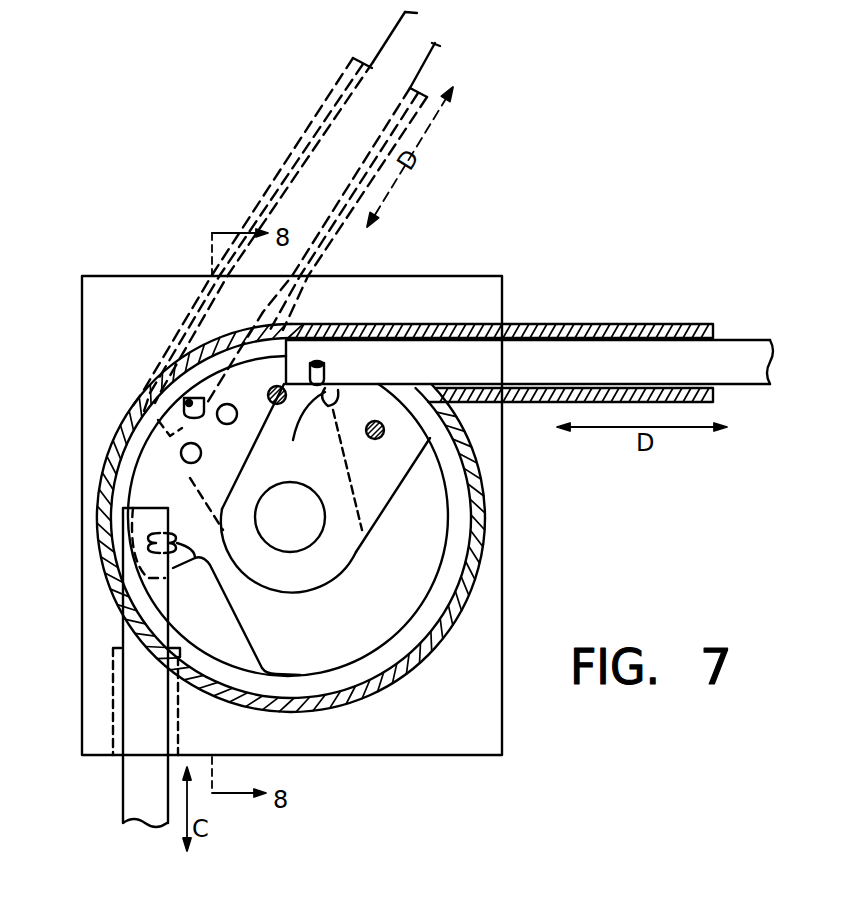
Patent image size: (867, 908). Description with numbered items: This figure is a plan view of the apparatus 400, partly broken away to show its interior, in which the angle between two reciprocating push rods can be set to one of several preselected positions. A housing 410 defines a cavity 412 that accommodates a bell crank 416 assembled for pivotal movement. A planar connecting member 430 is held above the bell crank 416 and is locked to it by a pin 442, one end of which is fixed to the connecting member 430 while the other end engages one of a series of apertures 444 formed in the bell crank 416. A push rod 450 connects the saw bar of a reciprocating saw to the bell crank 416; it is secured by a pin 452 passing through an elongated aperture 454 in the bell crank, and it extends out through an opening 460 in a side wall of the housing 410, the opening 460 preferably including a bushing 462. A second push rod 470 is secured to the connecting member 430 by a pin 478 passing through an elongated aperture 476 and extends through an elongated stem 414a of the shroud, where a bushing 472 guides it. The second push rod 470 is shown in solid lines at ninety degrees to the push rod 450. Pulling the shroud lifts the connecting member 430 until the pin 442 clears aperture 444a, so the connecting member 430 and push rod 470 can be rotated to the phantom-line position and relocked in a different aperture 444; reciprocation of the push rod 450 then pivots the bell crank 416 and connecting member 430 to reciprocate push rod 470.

The apparatus 400 is at (57, 331).
The housing 410 is at (399, 740).
The cavity 412 is at (450, 592).
The elongated stem 414a is at (560, 323).
The bell crank 416 is at (423, 517).
The planar connecting member 430 is at (372, 508).
The pin 442 is at (391, 408).
The apertures 444 is at (237, 420).
The aperture 444a is at (373, 441).
The push rod 450 is at (127, 808).
The pin 452 is at (192, 484).
The elongated aperture 454 is at (194, 562).
The opening 460 is at (122, 760).
The bushing 462 is at (112, 715).
The second push rod 470 is at (738, 350).
The bushing 472 is at (653, 324).
The elongated aperture 476 is at (357, 370).
The pin 478 is at (327, 362).